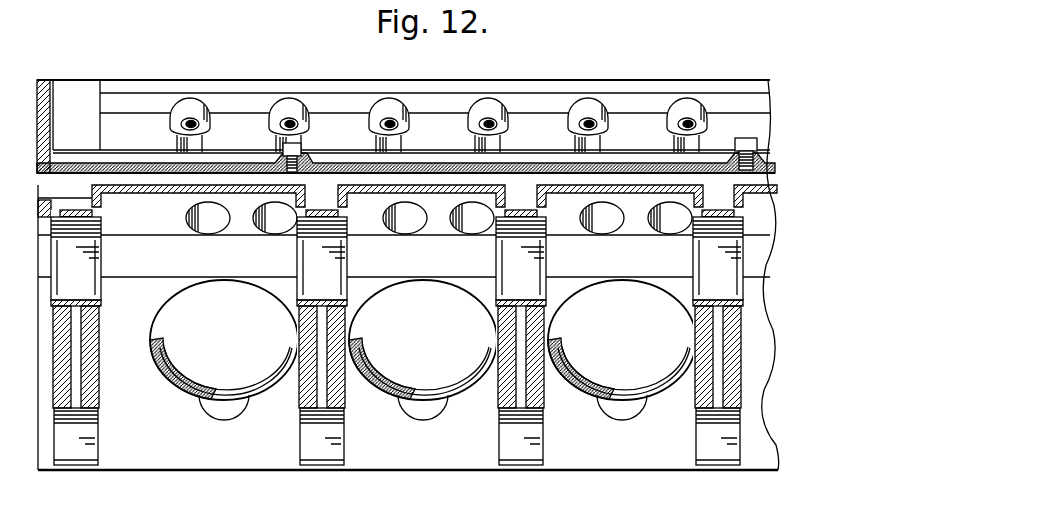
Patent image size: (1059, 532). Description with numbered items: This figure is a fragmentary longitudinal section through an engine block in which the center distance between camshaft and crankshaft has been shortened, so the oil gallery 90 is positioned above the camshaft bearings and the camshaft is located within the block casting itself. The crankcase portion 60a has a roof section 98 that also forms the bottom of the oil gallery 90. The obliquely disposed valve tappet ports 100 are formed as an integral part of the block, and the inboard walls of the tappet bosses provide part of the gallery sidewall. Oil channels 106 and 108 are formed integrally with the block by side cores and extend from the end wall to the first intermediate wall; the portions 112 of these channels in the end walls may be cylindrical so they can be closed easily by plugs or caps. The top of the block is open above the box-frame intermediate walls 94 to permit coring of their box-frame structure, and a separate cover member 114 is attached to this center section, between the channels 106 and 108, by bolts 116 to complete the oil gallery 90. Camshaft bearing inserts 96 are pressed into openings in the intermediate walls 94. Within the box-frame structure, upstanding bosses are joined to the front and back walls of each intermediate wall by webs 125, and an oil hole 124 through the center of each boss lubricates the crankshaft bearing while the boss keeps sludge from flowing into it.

The portions in the end walls 112 is at (72, 183).
The bolts 116 is at (298, 147).
The cover member 114 is at (433, 163).
The oil channel 108 is at (806, 162).
The oil channel 106 is at (140, 186).
The roof section 98 is at (172, 194).
The valve tappet ports 100 is at (279, 224).
The oil gallery 90 is at (377, 178).
The camshaft bearing inserts 96 is at (346, 297).
The box-frame intermediate walls 94 is at (347, 396).
The webs 125 is at (303, 394).
The oil hole 124 is at (323, 413).
The crankcase portion 60a is at (643, 440).